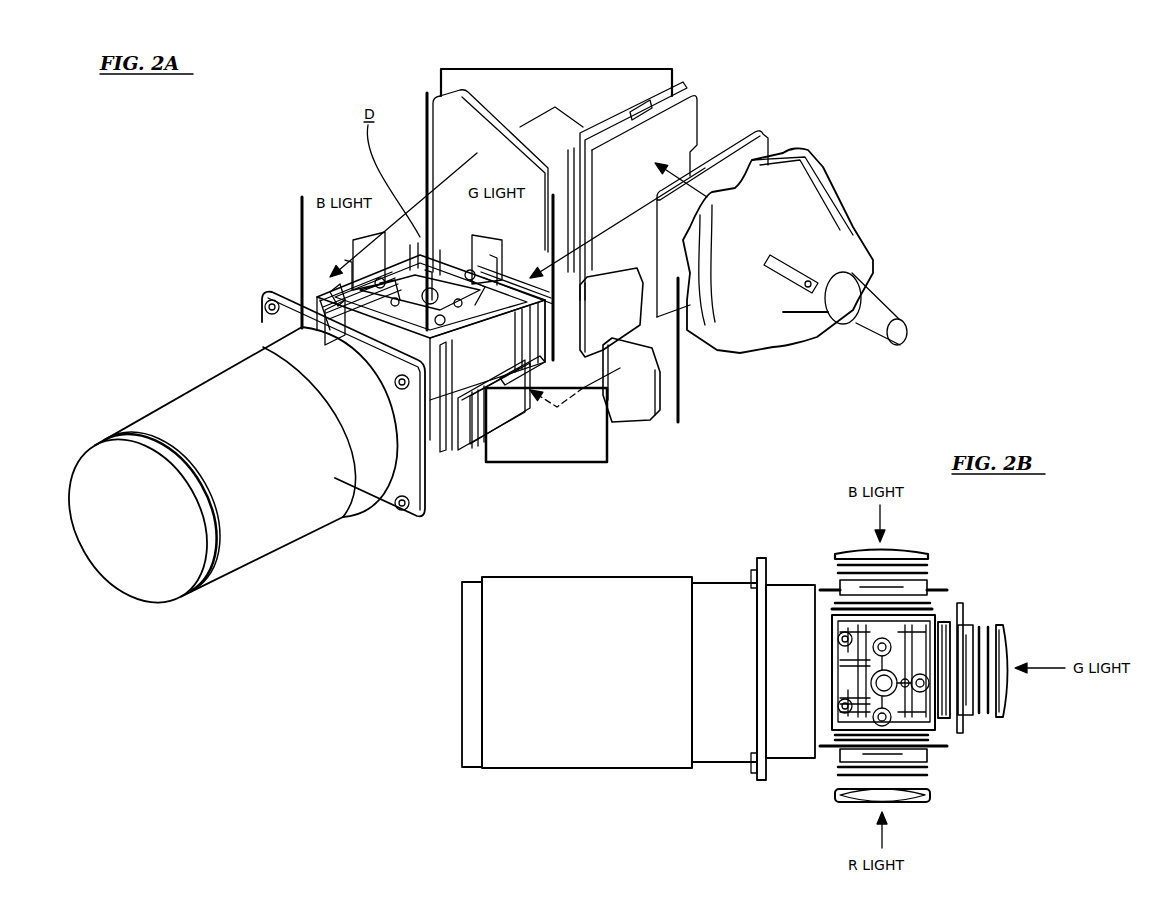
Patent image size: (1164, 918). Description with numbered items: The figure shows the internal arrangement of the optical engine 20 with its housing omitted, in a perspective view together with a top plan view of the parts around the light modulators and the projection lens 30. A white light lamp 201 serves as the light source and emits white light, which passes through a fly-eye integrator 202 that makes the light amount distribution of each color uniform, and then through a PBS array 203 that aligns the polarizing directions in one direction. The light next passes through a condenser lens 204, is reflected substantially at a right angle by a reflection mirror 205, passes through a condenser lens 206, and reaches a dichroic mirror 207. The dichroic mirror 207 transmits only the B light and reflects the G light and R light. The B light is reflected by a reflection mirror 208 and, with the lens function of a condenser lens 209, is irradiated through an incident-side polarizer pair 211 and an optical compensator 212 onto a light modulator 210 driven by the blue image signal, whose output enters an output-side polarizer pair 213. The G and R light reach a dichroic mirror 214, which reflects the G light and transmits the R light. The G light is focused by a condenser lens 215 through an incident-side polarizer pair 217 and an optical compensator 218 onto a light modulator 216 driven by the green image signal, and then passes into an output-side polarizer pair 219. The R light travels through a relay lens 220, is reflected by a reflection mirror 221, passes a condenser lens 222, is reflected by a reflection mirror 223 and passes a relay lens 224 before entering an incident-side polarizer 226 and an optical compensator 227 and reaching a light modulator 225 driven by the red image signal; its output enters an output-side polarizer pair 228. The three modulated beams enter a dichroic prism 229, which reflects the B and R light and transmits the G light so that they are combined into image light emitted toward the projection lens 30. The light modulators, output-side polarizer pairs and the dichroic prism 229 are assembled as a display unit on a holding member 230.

In FIG. 2A, the optical engine 20 is at (833, 138).
In FIG. 2A, the projection lens 30 is at (222, 377).
In FIG. 2B, the projection lens 30 is at (462, 652).
In FIG. 2A, the white light lamp 201 is at (810, 218).
In FIG. 2A, the fly-eye integrator 202 is at (753, 132).
In FIG. 2A, the PBS array 203 is at (683, 112).
In FIG. 2A, the condenser lens 204 is at (637, 107).
In FIG. 2A, the reflection mirror 205 is at (552, 67).
In FIG. 2A, the condenser lens 206 is at (478, 97).
In FIG. 2A, the dichroic mirror 207 is at (425, 96).
In FIG. 2A, the reflection mirror 208 is at (302, 197).
In FIG. 2A, the condenser lens 209 is at (348, 272).
In FIG. 2B, the condenser lens 209 is at (897, 550).
In FIG. 2A, the light modulator 210 is at (330, 290).
In FIG. 2B, the light modulator 210 is at (930, 590).
In FIG. 2B, the incident-side polarizer pair 211 is at (927, 572).
In FIG. 2B, the optical compensator 212 is at (927, 574).
In FIG. 2B, the output-side polarizer pair 213 is at (930, 604).
In FIG. 2A, the dichroic mirror 214 is at (560, 212).
In FIG. 2A, the condenser lens 215 is at (535, 277).
In FIG. 2B, the condenser lens 215 is at (1000, 708).
In FIG. 2A, the light modulator 216 is at (422, 240).
In FIG. 2B, the light modulator 216 is at (980, 718).
In FIG. 2B, the incident-side polarizer pair 217 is at (990, 720).
In FIG. 2B, the optical compensator 218 is at (967, 720).
In FIG. 2B, the output-side polarizer pair 219 is at (947, 718).
In FIG. 2A, the relay lens 220 is at (695, 270).
In FIG. 2A, the reflection mirror 221 is at (680, 370).
In FIG. 2A, the condenser lens 222 is at (660, 408).
In FIG. 2A, the reflection mirror 223 is at (585, 452).
In FIG. 2A, the relay lens 224 is at (520, 380).
In FIG. 2B, the relay lens 224 is at (868, 800).
In FIG. 2A, the light modulator 225 is at (440, 443).
In FIG. 2B, the light modulator 225 is at (830, 733).
In FIG. 2A, the incident-side polarizer 226 is at (480, 447).
In FIG. 2B, the incident-side polarizer 226 is at (838, 778).
In FIG. 2A, the optical compensator 227 is at (468, 447).
In FIG. 2B, the optical compensator 227 is at (833, 753).
In FIG. 2B, the output-side polarizer pair 228 is at (750, 750).
In FIG. 2A, the dichroic prism 229 is at (385, 460).
In FIG. 2B, the dichroic prism 229 is at (830, 637).
In FIG. 2A, the holding member 230 is at (345, 401).